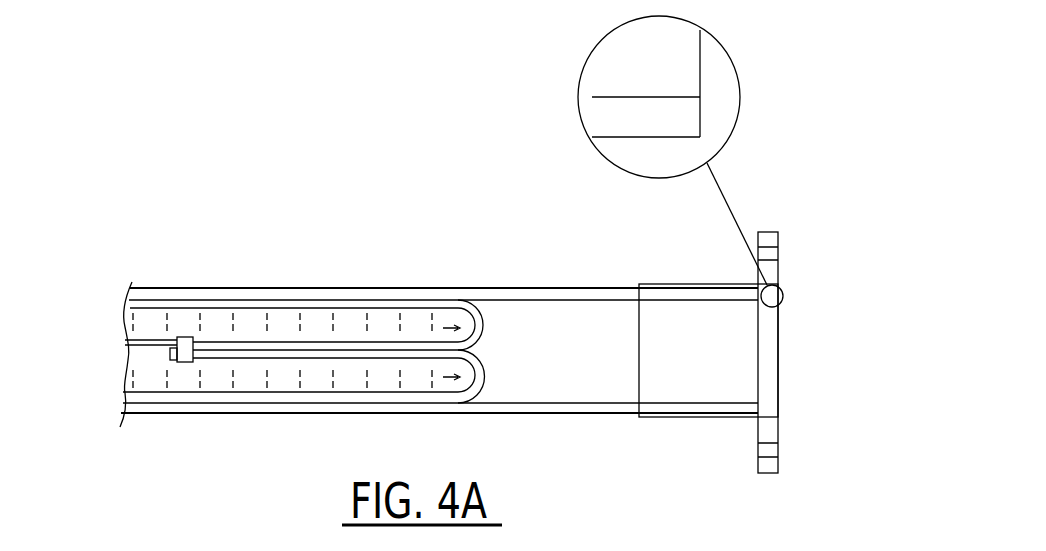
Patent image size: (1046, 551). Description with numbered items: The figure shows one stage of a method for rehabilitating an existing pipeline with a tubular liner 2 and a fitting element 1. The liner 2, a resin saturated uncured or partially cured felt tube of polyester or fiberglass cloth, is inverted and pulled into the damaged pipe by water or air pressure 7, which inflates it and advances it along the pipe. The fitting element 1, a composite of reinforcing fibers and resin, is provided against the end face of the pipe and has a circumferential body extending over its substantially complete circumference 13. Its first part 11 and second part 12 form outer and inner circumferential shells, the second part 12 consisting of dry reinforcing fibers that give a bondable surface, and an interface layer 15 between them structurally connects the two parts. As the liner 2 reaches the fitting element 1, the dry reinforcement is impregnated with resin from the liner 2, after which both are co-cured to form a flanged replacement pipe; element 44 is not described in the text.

The fitting element 1 is at (781, 423).
The liner 2 is at (377, 337).
The water or air pressure 7 is at (132, 323).
The first part 11 is at (737, 125).
The second part 12 is at (737, 75).
The circumference 13 is at (553, 288).
The interface layer 15 is at (593, 98).
The rod 44 is at (243, 357).